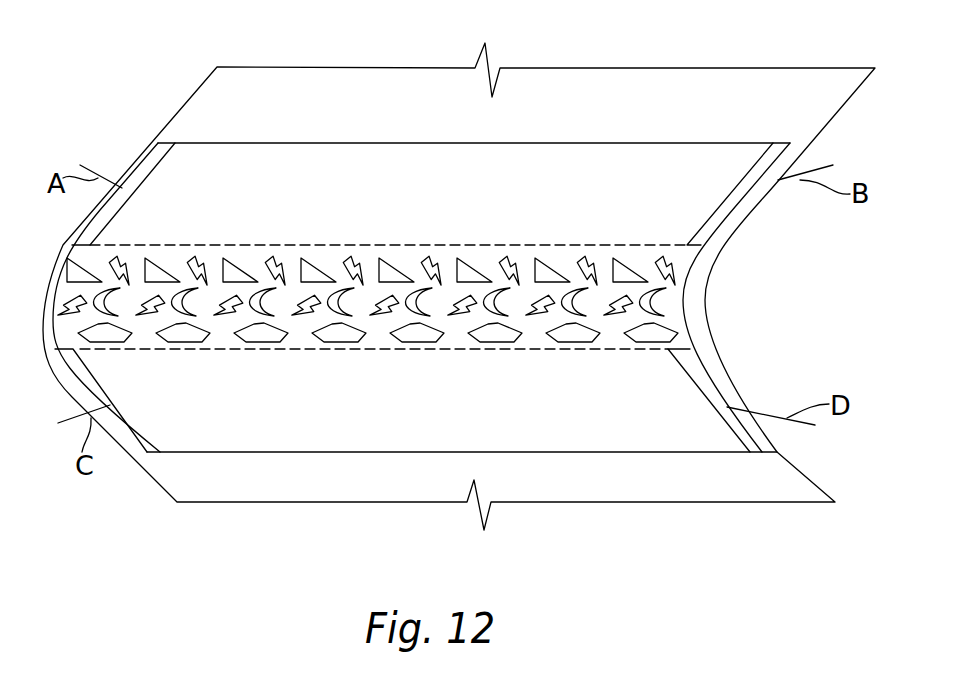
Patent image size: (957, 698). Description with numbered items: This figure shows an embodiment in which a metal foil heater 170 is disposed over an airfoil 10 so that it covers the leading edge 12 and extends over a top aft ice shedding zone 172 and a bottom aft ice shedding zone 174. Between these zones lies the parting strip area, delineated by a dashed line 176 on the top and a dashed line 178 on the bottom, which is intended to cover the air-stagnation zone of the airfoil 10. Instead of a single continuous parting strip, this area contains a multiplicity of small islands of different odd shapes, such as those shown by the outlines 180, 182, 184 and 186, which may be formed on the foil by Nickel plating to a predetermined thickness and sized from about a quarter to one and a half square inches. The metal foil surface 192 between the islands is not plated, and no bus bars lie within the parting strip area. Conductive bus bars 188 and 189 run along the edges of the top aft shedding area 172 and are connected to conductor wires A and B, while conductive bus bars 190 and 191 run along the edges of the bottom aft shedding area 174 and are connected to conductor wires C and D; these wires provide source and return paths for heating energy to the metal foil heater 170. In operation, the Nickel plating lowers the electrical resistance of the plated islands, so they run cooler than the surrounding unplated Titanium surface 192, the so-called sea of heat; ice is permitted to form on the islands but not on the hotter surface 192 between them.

The airfoil 10 is at (802, 117).
The leading edge 12 is at (706, 293).
The metal foil heater 170 is at (557, 155).
The top aft ice shedding zone 172 is at (382, 208).
The bottom aft ice shedding zone 174 is at (366, 441).
The top dashed line 176 is at (540, 245).
The bottom dashed line 178 is at (488, 350).
The island outline 180 is at (418, 337).
The island outline 182 is at (414, 292).
The island outline 184 is at (400, 293).
The island outline 186 is at (397, 260).
The conductive bus bar 188 is at (152, 167).
The conductive bus bar 189 is at (755, 172).
The conductive bus bar 190 is at (125, 420).
The conductive bus bar 191 is at (690, 385).
The metal foil surface between the islands 192 is at (148, 343).